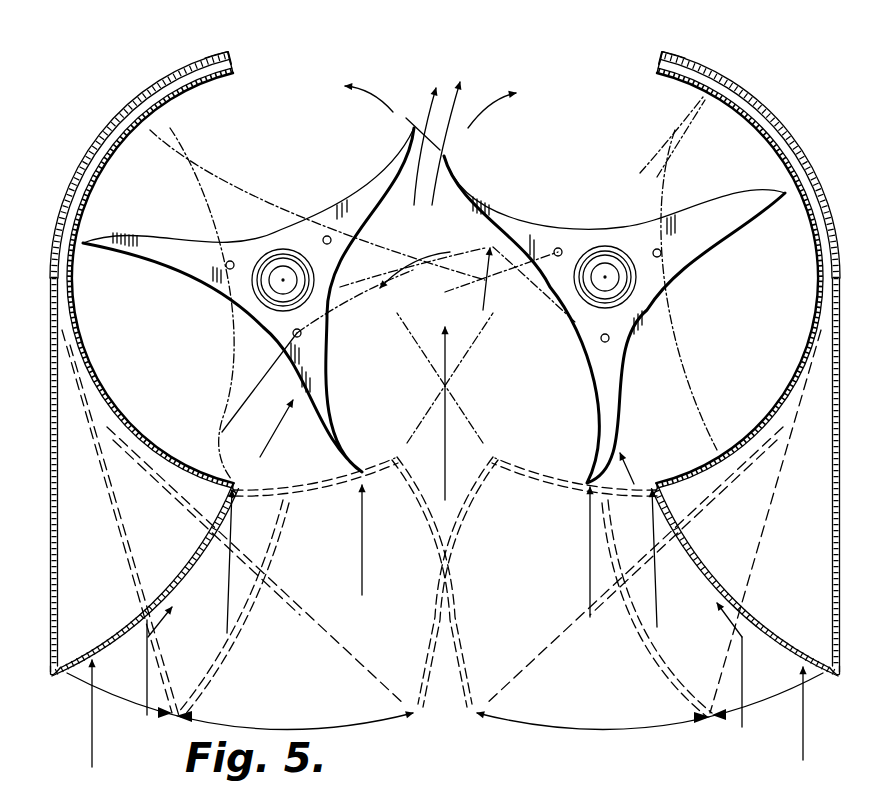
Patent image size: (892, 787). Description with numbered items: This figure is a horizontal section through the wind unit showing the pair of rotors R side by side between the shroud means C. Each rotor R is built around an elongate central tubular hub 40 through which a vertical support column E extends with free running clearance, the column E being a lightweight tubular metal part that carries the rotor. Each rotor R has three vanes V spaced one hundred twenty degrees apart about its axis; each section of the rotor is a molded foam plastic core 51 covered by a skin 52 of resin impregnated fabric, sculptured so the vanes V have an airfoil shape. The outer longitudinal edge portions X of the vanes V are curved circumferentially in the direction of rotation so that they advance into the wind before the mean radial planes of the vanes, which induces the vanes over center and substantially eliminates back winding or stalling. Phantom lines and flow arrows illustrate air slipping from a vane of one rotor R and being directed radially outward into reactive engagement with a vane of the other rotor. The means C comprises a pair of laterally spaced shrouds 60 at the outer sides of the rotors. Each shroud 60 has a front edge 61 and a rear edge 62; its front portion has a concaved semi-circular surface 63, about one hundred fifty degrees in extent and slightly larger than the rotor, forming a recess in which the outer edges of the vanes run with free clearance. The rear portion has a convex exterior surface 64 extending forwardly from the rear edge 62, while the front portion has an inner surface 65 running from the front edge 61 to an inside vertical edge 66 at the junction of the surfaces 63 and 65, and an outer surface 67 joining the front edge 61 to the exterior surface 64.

The tubular hub 40 is at (303, 298).
The core 51 is at (167, 250).
The skin 52 is at (187, 271).
The shroud 60 is at (82, 166).
The front edge 61 is at (50, 675).
The rear edge 62 is at (233, 62).
The concaved surface 63 is at (190, 93).
The exterior surface 64 is at (163, 77).
The inner surface 65 is at (110, 652).
The inside vertical edge 66 is at (236, 484).
The outer surface 67 is at (52, 347).
The means C is at (135, 418).
The vane V is at (177, 232).
The rotor R is at (303, 215).
The outer longitudinal edge portion X is at (410, 135).
The support column E is at (507, 562).